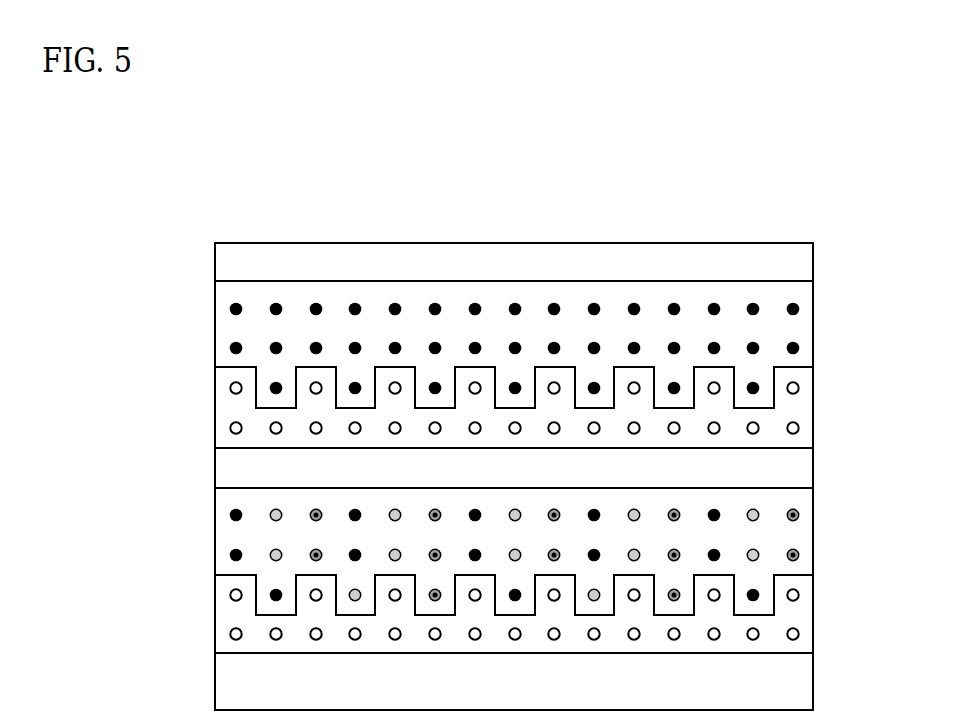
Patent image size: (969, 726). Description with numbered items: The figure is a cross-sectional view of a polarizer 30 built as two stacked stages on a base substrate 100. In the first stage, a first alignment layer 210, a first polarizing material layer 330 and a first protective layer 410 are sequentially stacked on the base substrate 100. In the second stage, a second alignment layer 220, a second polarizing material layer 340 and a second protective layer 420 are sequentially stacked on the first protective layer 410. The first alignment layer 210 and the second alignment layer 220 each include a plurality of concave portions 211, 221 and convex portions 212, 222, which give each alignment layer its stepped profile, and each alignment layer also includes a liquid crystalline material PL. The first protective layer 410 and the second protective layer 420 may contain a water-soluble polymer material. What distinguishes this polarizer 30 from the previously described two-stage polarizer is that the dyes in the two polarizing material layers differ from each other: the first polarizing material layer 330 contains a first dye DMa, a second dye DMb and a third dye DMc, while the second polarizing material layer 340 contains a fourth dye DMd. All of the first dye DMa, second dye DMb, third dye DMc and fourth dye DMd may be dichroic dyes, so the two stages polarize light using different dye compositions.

The polarizer 30 is at (722, 210).
The base substrate 100 is at (802, 682).
The first alignment layer 210 is at (802, 643).
The concave portions 211 is at (766, 603).
The convex portions 212 is at (723, 575).
The first polarizing material layer 330 is at (802, 532).
The first protective layer 410 is at (802, 477).
The second alignment layer 220 is at (802, 437).
The concave portions 221 is at (766, 395).
The convex portions 222 is at (723, 368).
The second polarizing material layer 340 is at (802, 325).
The second protective layer 420 is at (802, 263).
The liquid crystalline material PL is at (231, 388).
The first dye DMa is at (235, 548).
The second dye DMb is at (275, 548).
The third dye DMc is at (314, 548).
The fourth dye DMd is at (236, 342).